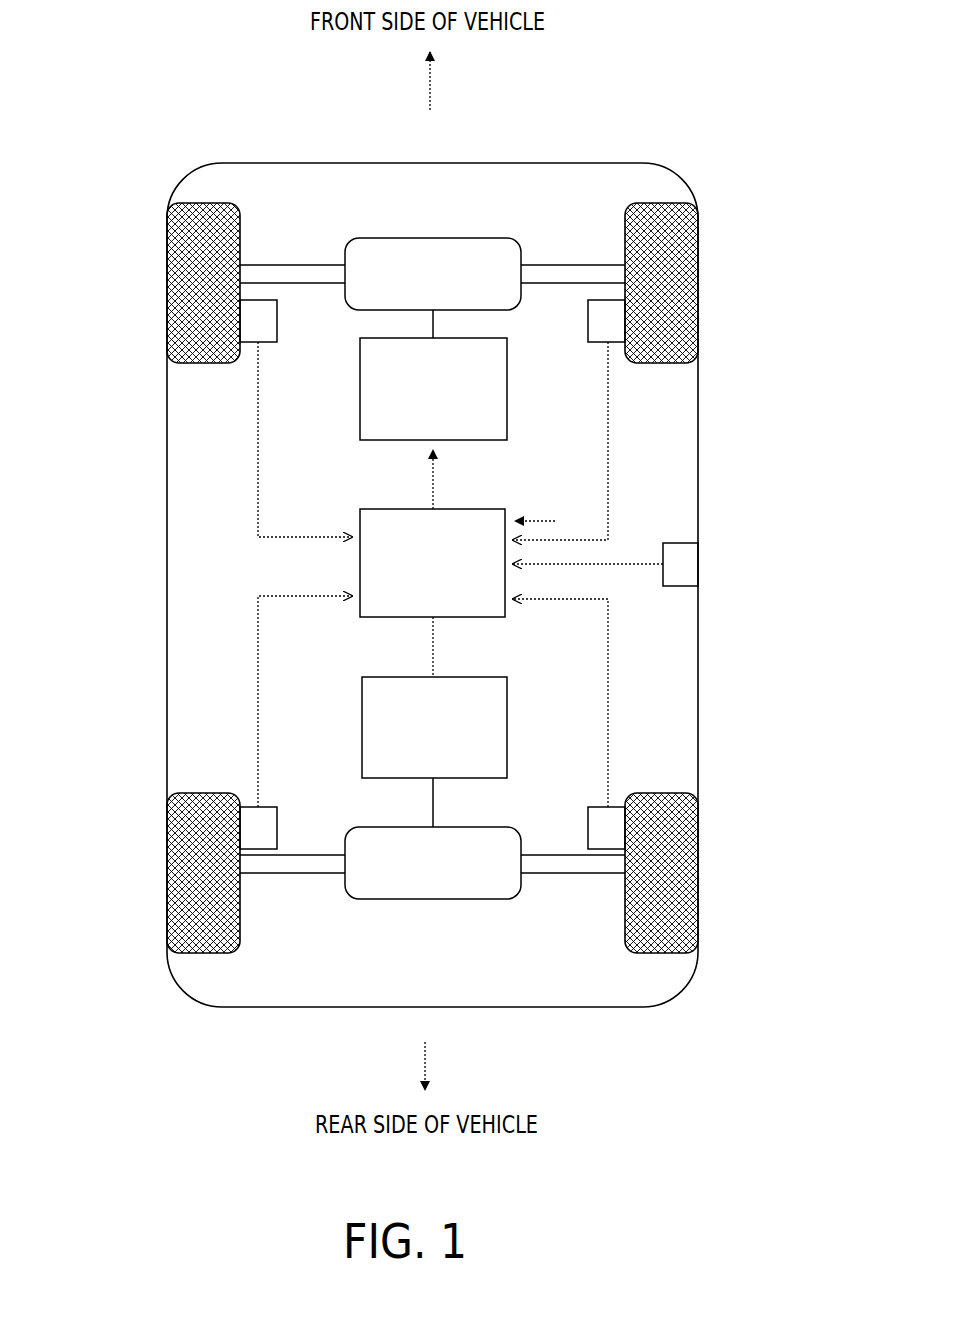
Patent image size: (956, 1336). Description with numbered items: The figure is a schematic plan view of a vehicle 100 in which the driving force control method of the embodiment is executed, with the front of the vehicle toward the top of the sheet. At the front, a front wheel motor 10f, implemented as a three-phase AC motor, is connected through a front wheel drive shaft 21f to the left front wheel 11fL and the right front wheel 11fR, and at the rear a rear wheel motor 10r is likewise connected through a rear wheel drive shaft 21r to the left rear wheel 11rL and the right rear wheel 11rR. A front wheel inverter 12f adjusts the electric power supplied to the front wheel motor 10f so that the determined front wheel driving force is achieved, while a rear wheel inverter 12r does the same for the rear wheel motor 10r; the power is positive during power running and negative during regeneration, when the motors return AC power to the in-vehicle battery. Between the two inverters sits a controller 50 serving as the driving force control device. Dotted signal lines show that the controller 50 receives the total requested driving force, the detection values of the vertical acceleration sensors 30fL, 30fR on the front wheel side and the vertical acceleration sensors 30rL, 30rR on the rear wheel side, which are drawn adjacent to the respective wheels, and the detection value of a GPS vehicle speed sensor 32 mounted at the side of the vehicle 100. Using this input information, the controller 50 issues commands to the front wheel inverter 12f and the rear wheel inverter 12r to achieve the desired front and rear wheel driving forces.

The vehicle 100 is at (555, 163).
The left front wheel 11fL is at (167, 285).
The right front wheel 11fR is at (698, 285).
The left rear wheel 11rL is at (167, 868).
The right rear wheel 11rR is at (698, 880).
The front wheel motor 10f is at (347, 242).
The rear wheel motor 10r is at (347, 890).
The front wheel inverter 12f is at (360, 380).
The rear wheel inverter 12r is at (362, 703).
The front wheel drive shaft 21f is at (572, 265).
The rear wheel drive shaft 21r is at (549, 873).
The vertical acceleration sensor 30fL is at (250, 345).
The vertical acceleration sensor 30fR is at (584, 345).
The vertical acceleration sensor 30rL is at (249, 807).
The vertical acceleration sensor 30rR is at (615, 807).
The GPS vehicle speed sensor 32 is at (682, 543).
The controller 50 is at (360, 566).